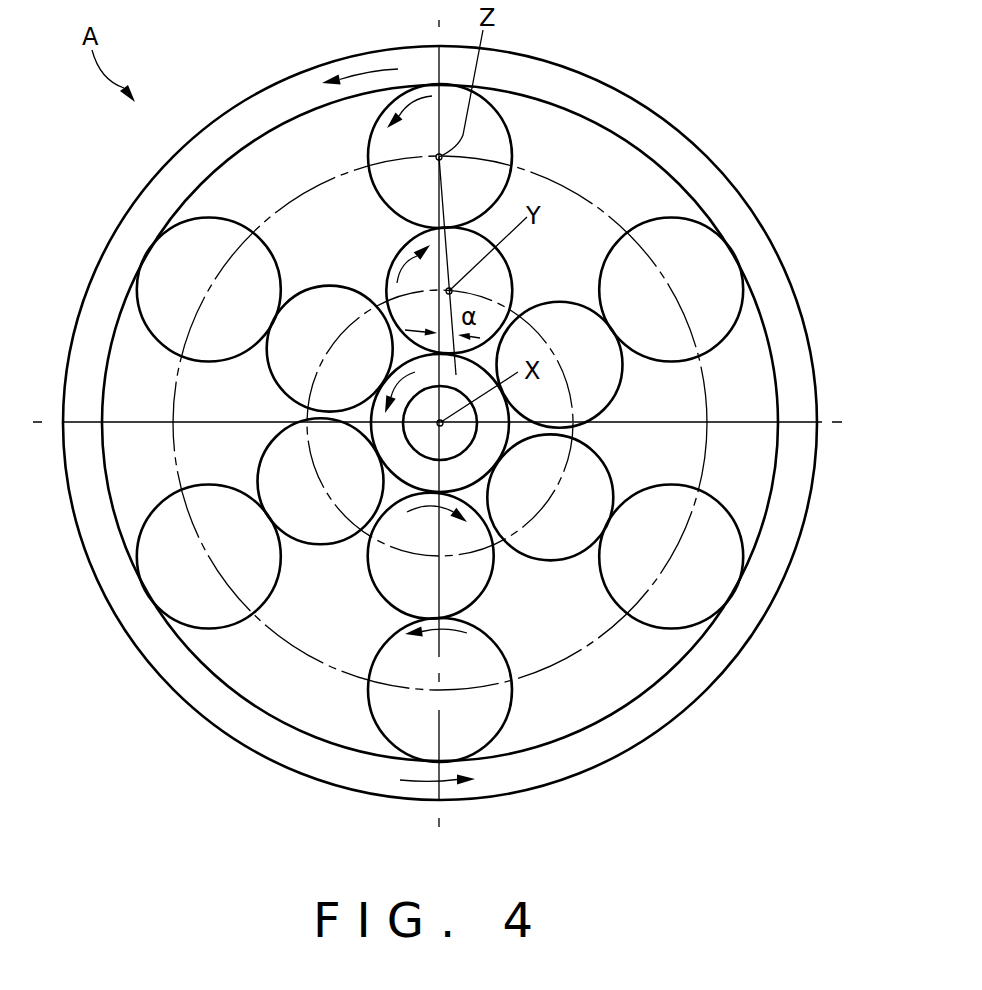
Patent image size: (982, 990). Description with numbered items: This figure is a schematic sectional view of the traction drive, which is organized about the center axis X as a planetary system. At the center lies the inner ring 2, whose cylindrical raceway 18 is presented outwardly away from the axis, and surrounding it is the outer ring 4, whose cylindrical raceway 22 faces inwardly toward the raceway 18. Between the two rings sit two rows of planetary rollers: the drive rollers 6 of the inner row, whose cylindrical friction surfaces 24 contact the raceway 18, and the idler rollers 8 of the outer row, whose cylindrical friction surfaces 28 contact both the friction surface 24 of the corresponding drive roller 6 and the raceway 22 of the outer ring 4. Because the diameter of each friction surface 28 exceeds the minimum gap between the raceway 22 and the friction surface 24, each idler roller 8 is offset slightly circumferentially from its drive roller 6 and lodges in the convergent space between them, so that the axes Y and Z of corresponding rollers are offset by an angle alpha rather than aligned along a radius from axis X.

The inner ring 2 is at (473, 472).
The outer ring 4 is at (618, 110).
The drive roller 6 is at (277, 363).
The idler roller 8 is at (153, 320).
The raceway 18 is at (400, 478).
The raceway 22 is at (625, 142).
The friction surface 24 is at (320, 285).
The friction surface 28 is at (217, 217).